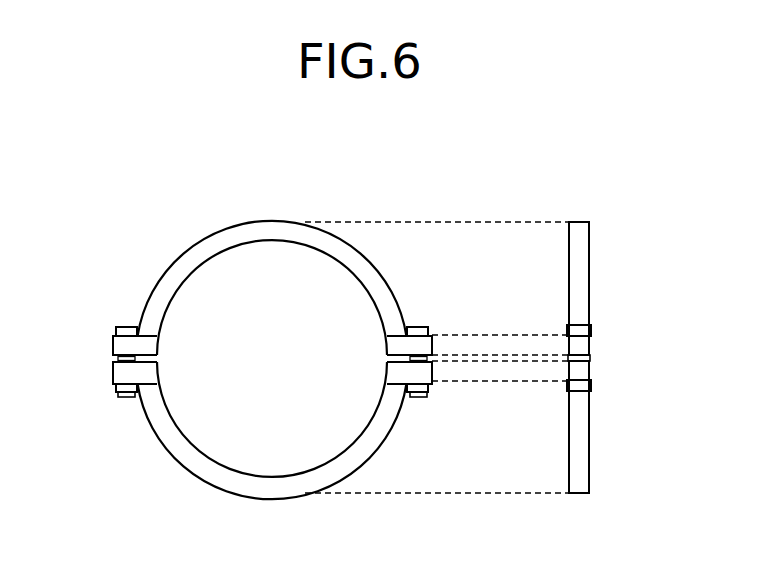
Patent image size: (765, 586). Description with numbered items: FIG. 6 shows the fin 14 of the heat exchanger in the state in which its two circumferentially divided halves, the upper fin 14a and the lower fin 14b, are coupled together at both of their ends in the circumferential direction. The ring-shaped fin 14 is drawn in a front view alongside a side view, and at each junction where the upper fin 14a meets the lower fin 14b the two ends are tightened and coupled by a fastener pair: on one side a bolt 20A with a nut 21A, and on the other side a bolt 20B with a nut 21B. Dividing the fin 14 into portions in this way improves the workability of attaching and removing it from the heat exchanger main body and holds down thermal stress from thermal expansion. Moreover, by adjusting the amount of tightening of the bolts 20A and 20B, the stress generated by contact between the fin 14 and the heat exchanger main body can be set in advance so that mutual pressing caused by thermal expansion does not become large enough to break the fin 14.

The fin 14 is at (360, 351).
The upper fin 14a is at (272, 221).
The lower fin 14b is at (272, 493).
The bolt 20A is at (125, 327).
The bolt 20B is at (414, 327).
The nut 21A is at (114, 387).
The nut 21B is at (430, 387).